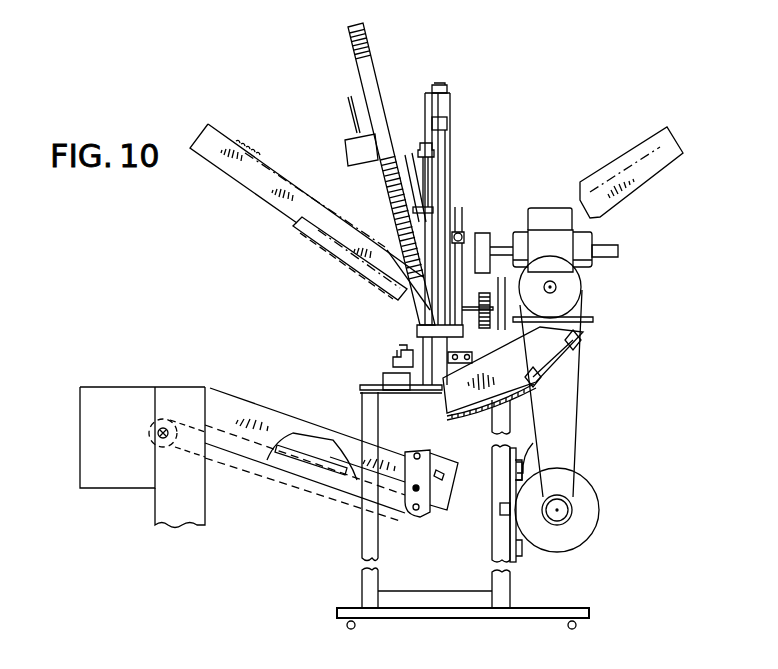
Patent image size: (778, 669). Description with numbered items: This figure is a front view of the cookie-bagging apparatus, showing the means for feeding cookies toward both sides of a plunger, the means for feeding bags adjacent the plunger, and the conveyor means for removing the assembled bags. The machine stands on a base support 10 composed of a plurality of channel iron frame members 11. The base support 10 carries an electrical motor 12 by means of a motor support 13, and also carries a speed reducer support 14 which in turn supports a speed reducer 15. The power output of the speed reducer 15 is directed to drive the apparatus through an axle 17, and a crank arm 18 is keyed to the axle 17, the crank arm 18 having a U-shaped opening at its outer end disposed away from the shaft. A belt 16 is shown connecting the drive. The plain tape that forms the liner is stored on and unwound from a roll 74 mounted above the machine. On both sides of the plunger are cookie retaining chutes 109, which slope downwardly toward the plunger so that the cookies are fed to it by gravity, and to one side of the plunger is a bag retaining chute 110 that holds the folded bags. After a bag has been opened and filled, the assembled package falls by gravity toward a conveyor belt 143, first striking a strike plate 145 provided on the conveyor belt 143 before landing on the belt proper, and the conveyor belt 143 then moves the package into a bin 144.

The base support 10 is at (522, 583).
The channel iron frame members 11 is at (362, 541).
The electrical motor 12 is at (596, 489).
The motor support 13 is at (531, 446).
The speed reducer support 14 is at (536, 383).
The speed reducer 15 is at (557, 229).
The drive belt 16 is at (579, 374).
The axle 17 is at (606, 258).
The crank arm 18 is at (473, 233).
The roll 74 is at (382, 83).
The cookie retaining chutes 109 is at (227, 137).
The bag retaining chute 110 is at (545, 369).
The conveyor belt 143 is at (297, 487).
The bin 144 is at (93, 405).
The strike plate 145 is at (432, 453).